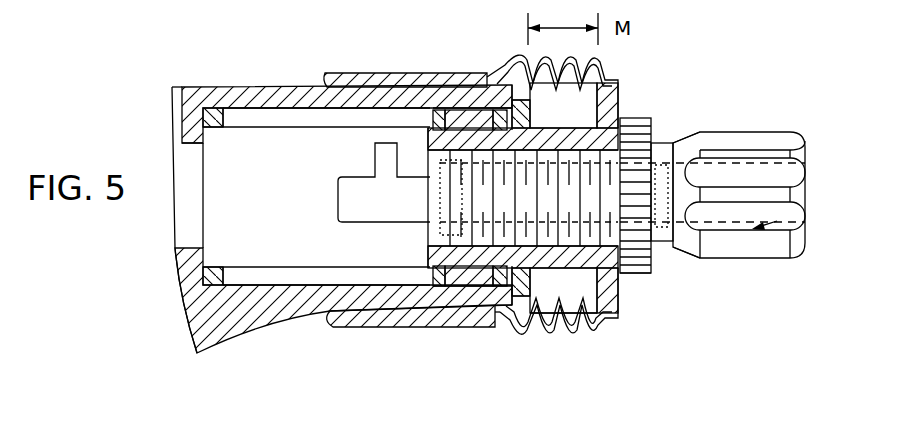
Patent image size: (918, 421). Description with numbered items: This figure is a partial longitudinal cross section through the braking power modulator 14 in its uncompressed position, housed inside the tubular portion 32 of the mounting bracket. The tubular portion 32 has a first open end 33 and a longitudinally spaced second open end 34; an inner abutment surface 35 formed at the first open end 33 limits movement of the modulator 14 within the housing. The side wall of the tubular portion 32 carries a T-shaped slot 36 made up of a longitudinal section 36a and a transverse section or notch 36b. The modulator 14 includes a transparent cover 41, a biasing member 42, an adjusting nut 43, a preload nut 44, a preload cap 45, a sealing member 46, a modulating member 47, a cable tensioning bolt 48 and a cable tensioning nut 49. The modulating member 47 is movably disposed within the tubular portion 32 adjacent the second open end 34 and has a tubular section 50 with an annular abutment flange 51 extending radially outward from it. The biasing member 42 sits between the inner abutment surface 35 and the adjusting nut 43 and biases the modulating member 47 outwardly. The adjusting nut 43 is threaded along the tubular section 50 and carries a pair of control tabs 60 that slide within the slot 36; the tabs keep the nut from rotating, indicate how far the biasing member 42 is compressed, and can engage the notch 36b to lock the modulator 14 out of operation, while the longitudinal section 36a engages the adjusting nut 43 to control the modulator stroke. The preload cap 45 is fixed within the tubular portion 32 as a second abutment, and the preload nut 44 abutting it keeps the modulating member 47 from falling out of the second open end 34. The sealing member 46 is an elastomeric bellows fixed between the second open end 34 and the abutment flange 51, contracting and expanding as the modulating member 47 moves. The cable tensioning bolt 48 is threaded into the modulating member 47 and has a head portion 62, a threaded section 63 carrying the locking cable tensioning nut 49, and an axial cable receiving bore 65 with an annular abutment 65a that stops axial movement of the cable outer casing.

The braking power modulator 14 is at (672, 60).
The tubular portion 32 is at (258, 80).
The first open end 33 is at (205, 240).
The second open end 34 is at (540, 330).
The inner abutment surface 35 is at (207, 133).
The T-shaped slot 36 is at (325, 210).
The longitudinal section 36a is at (411, 213).
The transverse section 36b is at (374, 168).
The transparent cover 41 is at (387, 327).
The biasing member 42 is at (222, 112).
The adjusting nut 43 is at (447, 110).
The preload nut 44 is at (502, 325).
The preload cap 45 is at (577, 332).
The sealing member 46 is at (600, 322).
The modulating member 47 is at (626, 97).
The cable tensioning bolt 48 is at (803, 128).
The cable tensioning nut 49 is at (656, 127).
The tubular section 50 is at (545, 130).
The annular abutment flange 51 is at (605, 285).
The control tab 60 is at (440, 196).
The head portion 62 is at (738, 132).
The threaded section 63 is at (652, 263).
The cable receiving bore 65 is at (780, 246).
The annular abutment 65a is at (677, 240).